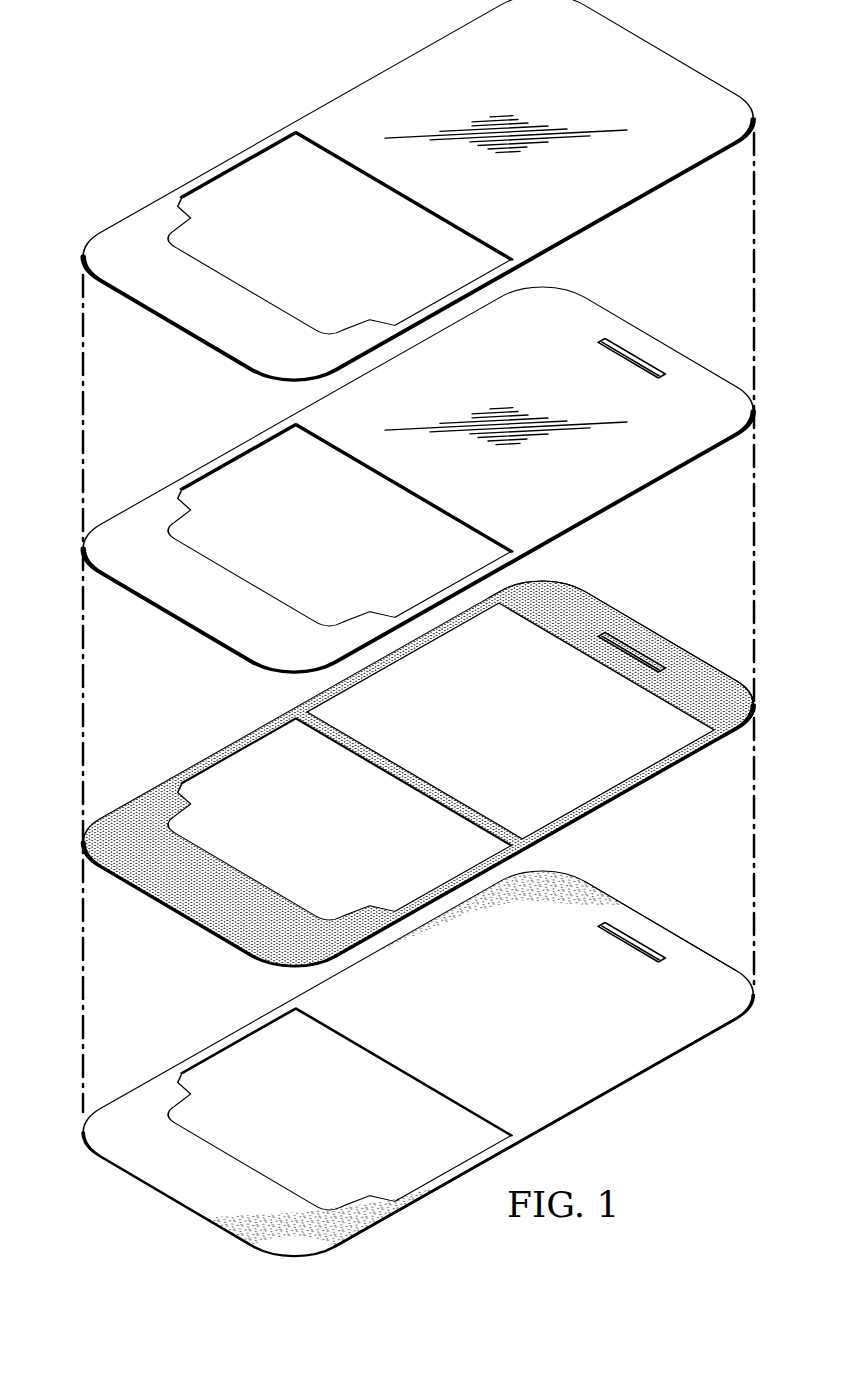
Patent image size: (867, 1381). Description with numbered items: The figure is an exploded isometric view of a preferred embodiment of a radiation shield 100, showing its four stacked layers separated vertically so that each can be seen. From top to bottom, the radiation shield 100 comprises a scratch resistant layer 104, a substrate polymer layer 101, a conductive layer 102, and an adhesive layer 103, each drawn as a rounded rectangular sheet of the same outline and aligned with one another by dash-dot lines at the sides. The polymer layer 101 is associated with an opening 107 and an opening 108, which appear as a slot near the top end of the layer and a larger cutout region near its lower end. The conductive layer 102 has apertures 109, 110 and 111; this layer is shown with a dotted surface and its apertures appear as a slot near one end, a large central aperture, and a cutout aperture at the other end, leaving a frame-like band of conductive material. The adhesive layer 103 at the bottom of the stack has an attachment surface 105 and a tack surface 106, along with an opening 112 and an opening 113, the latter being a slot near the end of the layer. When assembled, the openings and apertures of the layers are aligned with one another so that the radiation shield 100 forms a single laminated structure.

The radiation shield 100 is at (267, 65).
The substrate polymer layer 101 is at (180, 634).
The conductive layer 102 is at (180, 928).
The adhesive layer 103 is at (180, 1218).
The scratch resistant layer 104 is at (180, 342).
The attachment surface 105 is at (704, 962).
The tack surface 106 is at (631, 1080).
The opening 107 is at (640, 352).
The opening 108 is at (222, 464).
The aperture 109 is at (662, 688).
The aperture 110 is at (640, 644).
The aperture 111 is at (222, 758).
The opening 112 is at (222, 1048).
The opening 113 is at (222, 172).